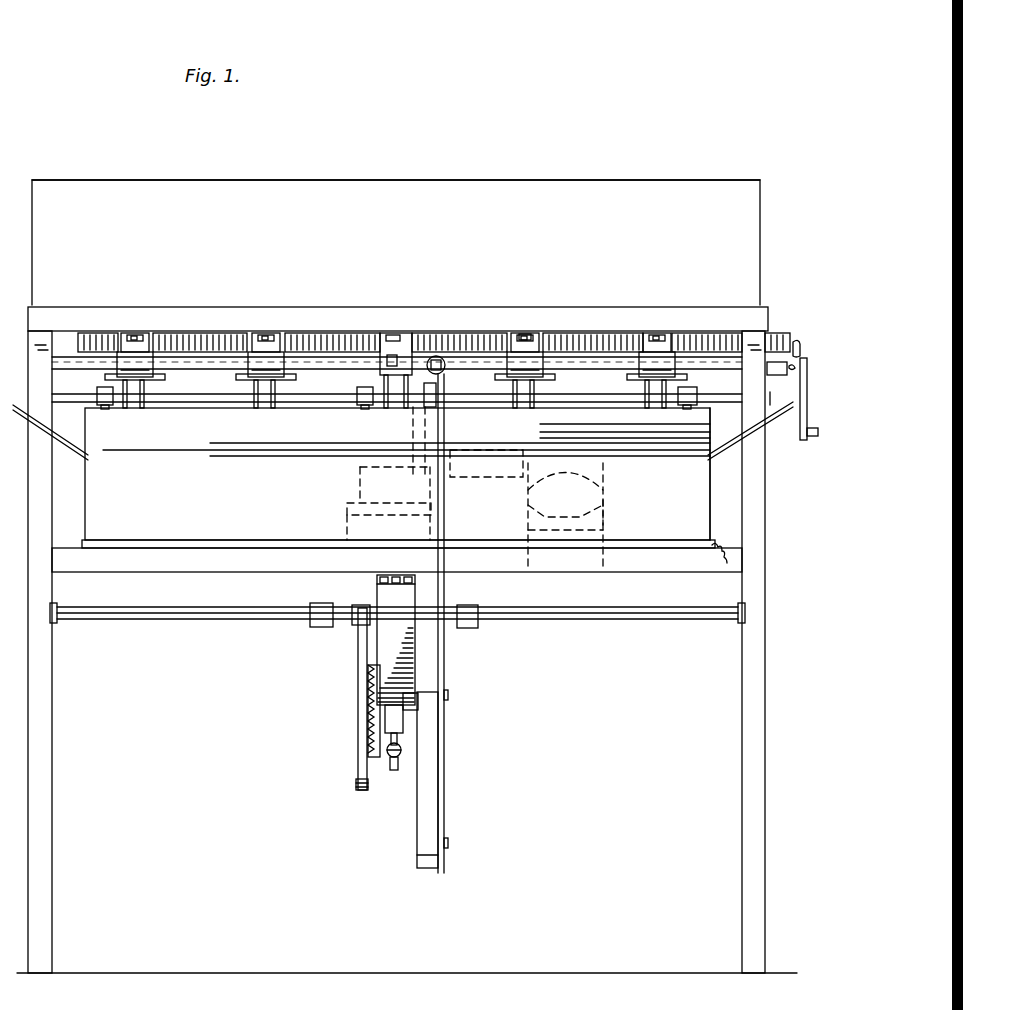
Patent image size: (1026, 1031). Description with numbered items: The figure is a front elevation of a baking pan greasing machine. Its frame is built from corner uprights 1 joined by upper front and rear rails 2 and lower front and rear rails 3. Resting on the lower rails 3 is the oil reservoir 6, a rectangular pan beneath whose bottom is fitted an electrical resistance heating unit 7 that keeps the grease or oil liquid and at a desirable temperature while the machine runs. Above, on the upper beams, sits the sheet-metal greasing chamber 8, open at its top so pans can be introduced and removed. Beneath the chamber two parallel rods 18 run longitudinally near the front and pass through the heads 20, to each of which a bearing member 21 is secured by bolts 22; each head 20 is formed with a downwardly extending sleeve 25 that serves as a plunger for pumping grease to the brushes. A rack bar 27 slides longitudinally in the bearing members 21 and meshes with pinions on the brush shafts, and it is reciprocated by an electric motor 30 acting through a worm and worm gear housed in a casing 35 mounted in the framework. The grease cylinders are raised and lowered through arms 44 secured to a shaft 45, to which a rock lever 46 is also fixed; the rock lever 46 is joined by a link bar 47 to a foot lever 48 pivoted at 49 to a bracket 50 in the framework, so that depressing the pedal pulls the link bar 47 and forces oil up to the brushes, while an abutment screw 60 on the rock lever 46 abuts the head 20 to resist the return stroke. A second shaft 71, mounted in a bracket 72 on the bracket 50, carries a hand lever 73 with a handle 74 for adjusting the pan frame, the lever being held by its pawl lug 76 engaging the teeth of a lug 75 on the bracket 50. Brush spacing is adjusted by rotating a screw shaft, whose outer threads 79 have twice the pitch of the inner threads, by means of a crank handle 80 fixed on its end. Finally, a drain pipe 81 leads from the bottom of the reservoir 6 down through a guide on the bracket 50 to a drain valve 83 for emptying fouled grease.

The corner uprights 1 is at (748, 770).
The upper front and rear rails 2 is at (578, 318).
The lower front and rear rails 3 is at (157, 563).
The oil reservoir 6 is at (700, 510).
The electrical resistance heating unit 7 is at (240, 545).
The greasing chamber 8 is at (538, 197).
The rods 18 is at (203, 363).
The heads 20 is at (264, 360).
The bearing members 21 is at (523, 336).
The bolts 22 is at (660, 340).
The sleeve 25 is at (530, 407).
The rack bar 27 is at (305, 338).
The electric motor 30 is at (595, 492).
The casing 35 is at (350, 487).
The arms 44 is at (347, 372).
The shaft 45 is at (188, 396).
The rock lever 46 is at (436, 385).
The link bar 47 is at (446, 652).
The foot lever 48 is at (428, 815).
The pivot 49 is at (420, 708).
The bracket 50 is at (388, 636).
The abutment screw 60 is at (436, 356).
The shaft 71 is at (592, 615).
The bracket 72 is at (460, 605).
The hand lever 73 is at (360, 668).
The handle 74 is at (356, 783).
The lug 75 is at (370, 752).
The pawl lug 76 is at (370, 718).
The threads 79 is at (782, 360).
The crank handle 80 is at (800, 422).
The drain pipe 81 is at (405, 728).
The drain valve 83 is at (392, 765).